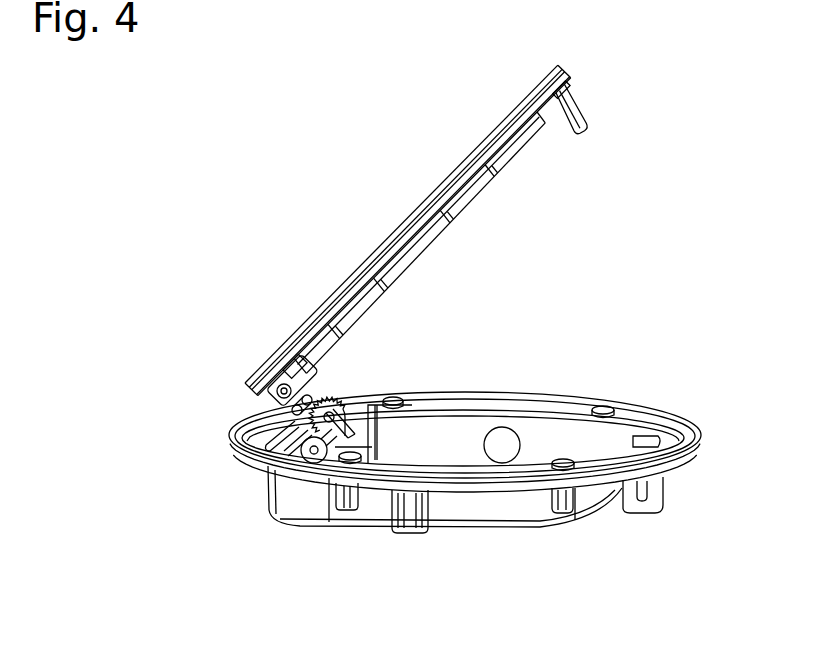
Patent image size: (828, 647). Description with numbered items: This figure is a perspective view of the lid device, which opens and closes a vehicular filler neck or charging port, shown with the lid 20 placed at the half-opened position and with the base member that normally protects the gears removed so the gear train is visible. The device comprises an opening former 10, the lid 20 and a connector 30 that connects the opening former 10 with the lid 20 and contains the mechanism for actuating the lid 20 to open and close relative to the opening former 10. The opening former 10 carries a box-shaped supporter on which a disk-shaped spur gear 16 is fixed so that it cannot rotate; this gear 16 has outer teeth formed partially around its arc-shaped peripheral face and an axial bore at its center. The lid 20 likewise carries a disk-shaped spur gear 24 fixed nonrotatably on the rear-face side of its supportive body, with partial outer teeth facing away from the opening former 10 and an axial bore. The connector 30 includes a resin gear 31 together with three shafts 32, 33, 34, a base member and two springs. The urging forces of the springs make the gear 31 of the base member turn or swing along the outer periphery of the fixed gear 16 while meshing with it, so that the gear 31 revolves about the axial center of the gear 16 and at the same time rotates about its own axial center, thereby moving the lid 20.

The opening former 10 is at (532, 510).
The gear 16 is at (400, 426).
The lid 20 is at (463, 157).
The gear 24 is at (320, 372).
The connector 30 is at (350, 388).
The gear 31 is at (332, 388).
The shaft 32 is at (312, 460).
The shaft 33 is at (285, 393).
The shaft 34 is at (331, 379).